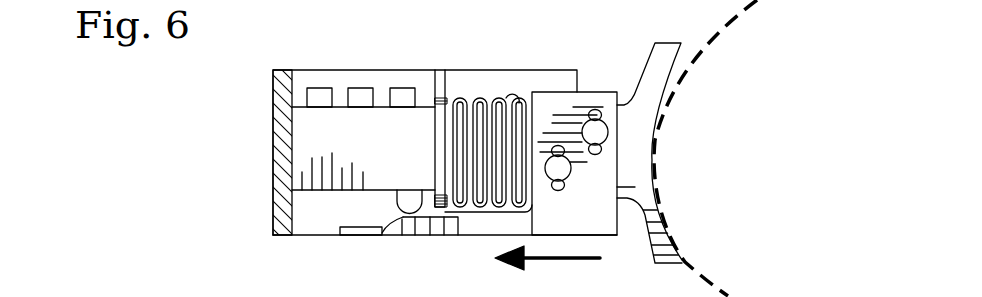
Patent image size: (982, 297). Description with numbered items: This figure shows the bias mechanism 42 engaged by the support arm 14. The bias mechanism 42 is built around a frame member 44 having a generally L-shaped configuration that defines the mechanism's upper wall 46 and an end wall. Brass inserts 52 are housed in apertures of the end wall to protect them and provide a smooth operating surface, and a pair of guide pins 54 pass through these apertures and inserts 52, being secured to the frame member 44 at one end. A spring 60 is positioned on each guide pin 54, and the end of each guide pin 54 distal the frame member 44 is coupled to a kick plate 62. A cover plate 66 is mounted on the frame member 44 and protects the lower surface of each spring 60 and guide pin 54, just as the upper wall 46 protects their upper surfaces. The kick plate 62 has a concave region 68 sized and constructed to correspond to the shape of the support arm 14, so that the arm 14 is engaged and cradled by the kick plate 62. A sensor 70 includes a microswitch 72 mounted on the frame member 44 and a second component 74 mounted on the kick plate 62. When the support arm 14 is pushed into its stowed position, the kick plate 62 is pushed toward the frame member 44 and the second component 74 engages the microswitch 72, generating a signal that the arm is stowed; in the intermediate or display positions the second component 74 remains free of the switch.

The support arm 14 is at (717, 280).
The bias mechanism 42 is at (252, 141).
The frame member 44 is at (307, 80).
The upper wall 46 is at (444, 100).
The brass inserts 52 is at (442, 100).
The guide pins 54 is at (508, 108).
The spring 60 is at (508, 108).
The kick plate 62 is at (676, 79).
The cover plate 66 is at (272, 182).
The concave region 68 is at (662, 199).
The sensor 70 is at (368, 212).
The microswitch 72 is at (352, 190).
The second component 74 is at (392, 237).